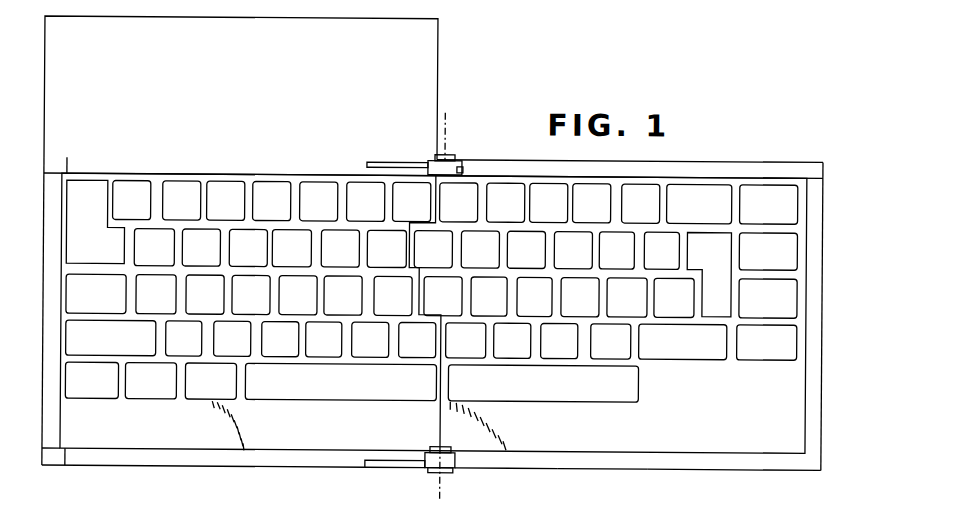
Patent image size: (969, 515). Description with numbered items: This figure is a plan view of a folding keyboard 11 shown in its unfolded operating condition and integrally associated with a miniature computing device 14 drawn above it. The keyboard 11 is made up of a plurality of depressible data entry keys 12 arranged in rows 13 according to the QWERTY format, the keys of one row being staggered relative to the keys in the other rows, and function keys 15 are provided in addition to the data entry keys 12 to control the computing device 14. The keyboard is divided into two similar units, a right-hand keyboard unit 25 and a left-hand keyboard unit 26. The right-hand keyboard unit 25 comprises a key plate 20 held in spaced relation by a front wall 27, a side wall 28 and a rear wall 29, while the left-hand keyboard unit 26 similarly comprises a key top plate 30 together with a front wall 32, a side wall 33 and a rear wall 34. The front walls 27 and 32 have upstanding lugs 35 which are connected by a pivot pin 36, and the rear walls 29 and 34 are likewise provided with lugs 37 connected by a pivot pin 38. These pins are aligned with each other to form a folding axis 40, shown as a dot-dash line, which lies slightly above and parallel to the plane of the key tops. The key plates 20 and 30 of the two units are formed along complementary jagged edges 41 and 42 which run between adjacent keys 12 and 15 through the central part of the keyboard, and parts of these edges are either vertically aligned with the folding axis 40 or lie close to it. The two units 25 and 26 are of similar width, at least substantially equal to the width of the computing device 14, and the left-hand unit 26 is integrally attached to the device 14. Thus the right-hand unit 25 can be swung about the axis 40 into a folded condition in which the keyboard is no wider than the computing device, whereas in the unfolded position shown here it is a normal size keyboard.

The keyboard 11 is at (768, 154).
The data entry keys 12 is at (558, 186).
The rows 13 is at (137, 287).
The computing device 14 is at (438, 65).
The function keys 15 is at (793, 233).
The key plate 20 is at (562, 451).
The right-hand keyboard unit 25 is at (641, 472).
The left-hand keyboard unit 26 is at (330, 472).
The front wall 27 is at (750, 459).
The side wall 28 is at (818, 294).
The rear wall 29 is at (684, 165).
The key top plate 30 is at (247, 449).
The front wall 32 is at (166, 462).
The side wall 33 is at (48, 414).
The rear wall 34 is at (277, 160).
The lugs 35 is at (431, 466).
The pivot pin 36 is at (455, 447).
The lugs 37 is at (459, 163).
The pivot pin 38 is at (452, 151).
The folding axis 40 is at (446, 110).
The jagged edge 41 is at (442, 420).
The jagged edge 42 is at (445, 430).